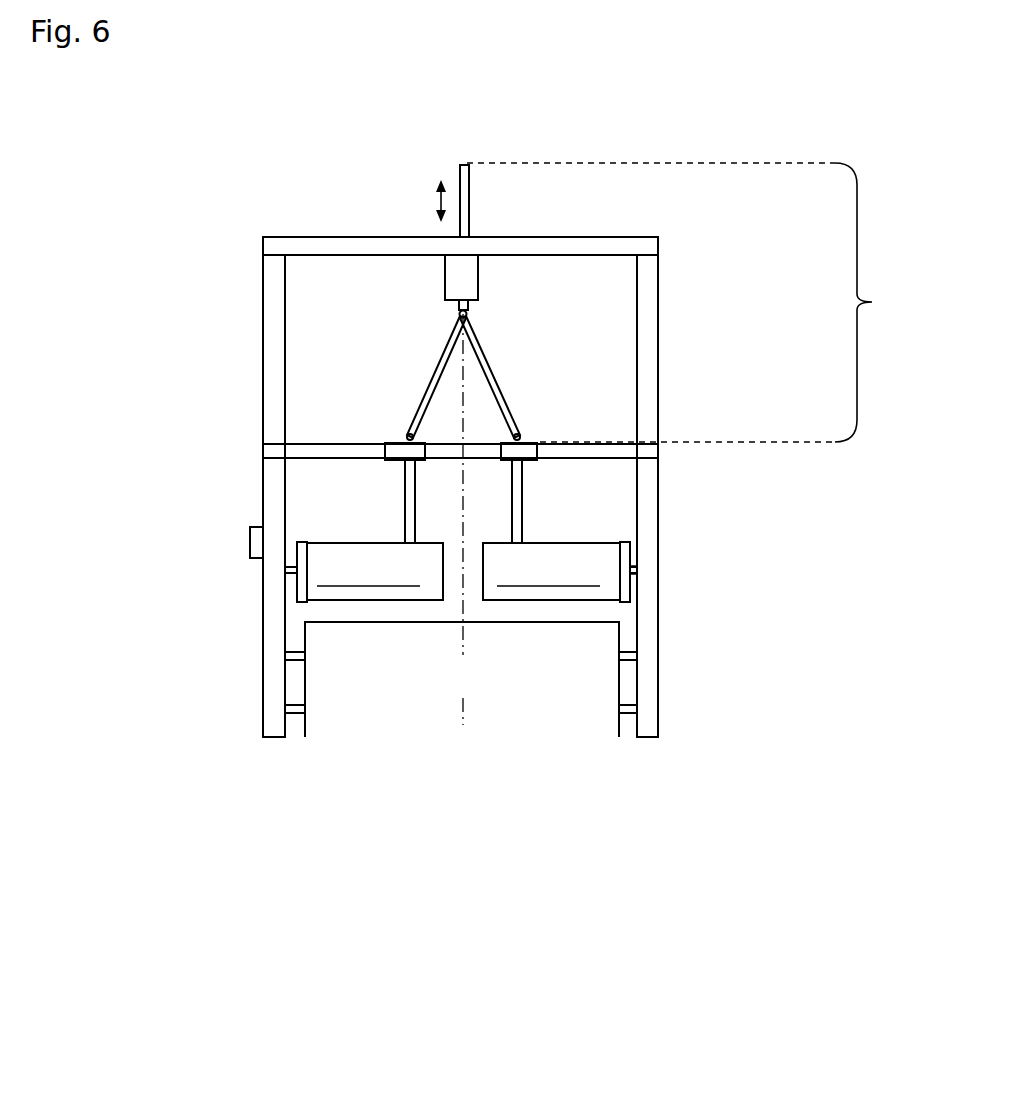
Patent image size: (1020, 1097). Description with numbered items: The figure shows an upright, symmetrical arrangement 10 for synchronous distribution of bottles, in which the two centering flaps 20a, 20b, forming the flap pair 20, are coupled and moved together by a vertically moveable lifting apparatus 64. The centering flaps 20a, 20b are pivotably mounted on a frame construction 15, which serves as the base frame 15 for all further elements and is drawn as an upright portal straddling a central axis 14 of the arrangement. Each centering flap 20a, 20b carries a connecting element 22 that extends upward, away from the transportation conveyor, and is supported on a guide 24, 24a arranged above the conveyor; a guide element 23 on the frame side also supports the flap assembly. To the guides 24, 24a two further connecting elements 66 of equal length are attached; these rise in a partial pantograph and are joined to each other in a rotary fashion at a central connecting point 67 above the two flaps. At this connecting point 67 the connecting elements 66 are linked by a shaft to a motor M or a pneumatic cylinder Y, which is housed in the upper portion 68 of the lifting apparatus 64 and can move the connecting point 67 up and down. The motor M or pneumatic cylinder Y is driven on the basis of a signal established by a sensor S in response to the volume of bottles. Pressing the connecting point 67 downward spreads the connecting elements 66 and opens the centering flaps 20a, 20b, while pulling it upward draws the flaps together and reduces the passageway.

The arrangement 10 is at (446, 887).
The center line 14 is at (470, 690).
The frame construction 15 is at (273, 675).
The holding devices 20 is at (461, 572).
The centering flap 20a is at (364, 572).
The centering flap 20b is at (560, 572).
The connecting elements 22 is at (513, 528).
The guide 23 is at (628, 573).
The carriages 24 is at (341, 422).
The guide 24a is at (413, 452).
The lifting apparatus 64 is at (692, 302).
The further connecting elements 66 is at (443, 350).
The connecting point 67 is at (462, 313).
The upright 68 is at (642, 285).
The sensor S is at (253, 527).
The motor M is at (505, 206).
The pneumatic cylinder Y is at (470, 277).